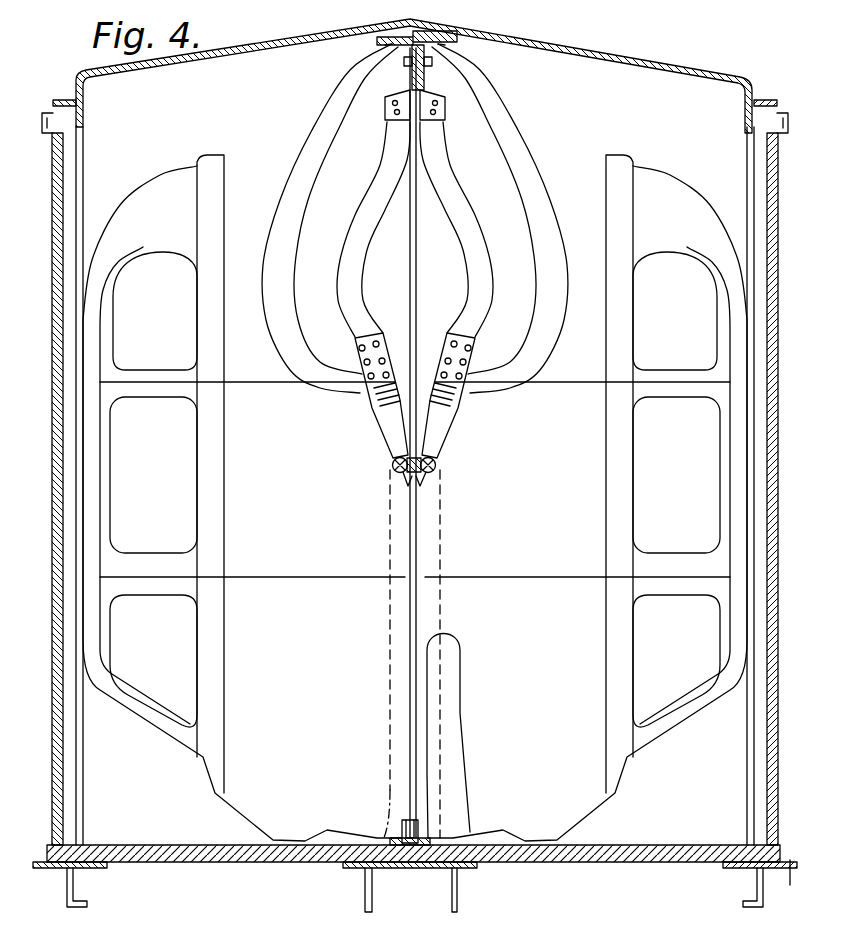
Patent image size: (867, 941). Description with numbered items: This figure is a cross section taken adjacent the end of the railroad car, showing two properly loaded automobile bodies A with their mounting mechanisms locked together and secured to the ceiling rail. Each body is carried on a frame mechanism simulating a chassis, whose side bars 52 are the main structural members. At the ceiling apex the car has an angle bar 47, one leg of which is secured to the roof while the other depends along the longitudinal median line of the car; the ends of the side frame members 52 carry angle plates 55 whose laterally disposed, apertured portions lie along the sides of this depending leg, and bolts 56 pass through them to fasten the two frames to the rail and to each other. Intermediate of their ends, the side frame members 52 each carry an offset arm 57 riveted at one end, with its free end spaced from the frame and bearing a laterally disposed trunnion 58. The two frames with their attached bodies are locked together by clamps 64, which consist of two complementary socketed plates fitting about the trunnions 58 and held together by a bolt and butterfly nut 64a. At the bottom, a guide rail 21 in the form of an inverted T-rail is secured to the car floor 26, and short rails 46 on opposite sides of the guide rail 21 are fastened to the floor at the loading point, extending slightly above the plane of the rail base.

The guide rail 21 is at (423, 815).
The car floor 26 is at (606, 854).
The short rails 46 is at (388, 845).
The angle bar 47 is at (427, 43).
The side bars 52 is at (450, 214).
The angle plates 55 is at (378, 43).
The bolts 56 is at (440, 49).
The offset arm 57 is at (380, 408).
The trunnion 58 is at (392, 466).
The clamps 64 is at (404, 477).
The bolt and butterfly nut 64a is at (421, 477).
The automobile bodies A is at (655, 140).